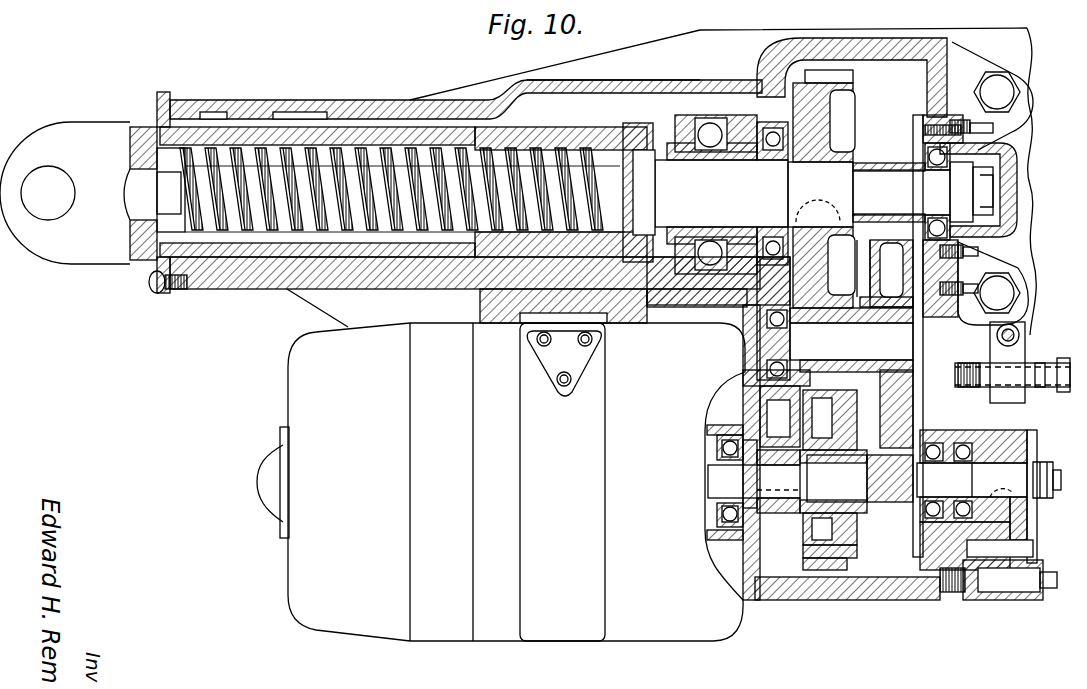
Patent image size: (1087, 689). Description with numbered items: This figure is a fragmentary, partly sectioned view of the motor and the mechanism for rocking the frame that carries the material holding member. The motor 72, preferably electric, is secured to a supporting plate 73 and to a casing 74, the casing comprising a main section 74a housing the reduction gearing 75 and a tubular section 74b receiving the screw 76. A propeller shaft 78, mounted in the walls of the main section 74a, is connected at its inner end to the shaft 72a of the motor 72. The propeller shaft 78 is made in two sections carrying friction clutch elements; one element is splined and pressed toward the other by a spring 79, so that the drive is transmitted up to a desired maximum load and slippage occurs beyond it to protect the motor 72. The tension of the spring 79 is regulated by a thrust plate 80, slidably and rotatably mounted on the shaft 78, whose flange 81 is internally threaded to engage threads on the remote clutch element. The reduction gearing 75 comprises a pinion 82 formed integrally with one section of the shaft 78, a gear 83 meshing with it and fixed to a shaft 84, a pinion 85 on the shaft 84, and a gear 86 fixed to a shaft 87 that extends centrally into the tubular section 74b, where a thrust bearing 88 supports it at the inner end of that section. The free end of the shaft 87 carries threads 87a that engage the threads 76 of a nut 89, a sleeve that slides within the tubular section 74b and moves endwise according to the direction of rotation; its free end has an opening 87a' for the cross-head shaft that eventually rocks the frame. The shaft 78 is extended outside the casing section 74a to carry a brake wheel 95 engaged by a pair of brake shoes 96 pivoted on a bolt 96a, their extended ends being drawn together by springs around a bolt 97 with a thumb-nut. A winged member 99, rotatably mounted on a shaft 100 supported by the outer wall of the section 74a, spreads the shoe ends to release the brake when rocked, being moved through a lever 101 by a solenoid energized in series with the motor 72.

The motor 72 is at (630, 641).
The shaft of the motor 72a is at (720, 482).
The supporting plate 73 is at (763, 40).
The casing 74 is at (480, 302).
The main section of the casing 74a is at (885, 600).
The tubular section of the casing 74b is at (588, 84).
The reduction gearing 75 is at (912, 335).
The screw 76 is at (592, 160).
The propeller shaft 78 is at (837, 478).
The spring 79 is at (850, 540).
The thrust plate 80 is at (857, 562).
The flange 81 is at (828, 570).
The pinion 82 is at (880, 508).
The gear 83 is at (880, 395).
The shaft 84 is at (832, 330).
The pinion 85 is at (842, 312).
The gear 86 is at (842, 113).
The shaft 87 is at (838, 170).
The threads 87a is at (633, 182).
The opening 87a' is at (65, 193).
The thrust bearing 88 is at (710, 120).
The nut 89 is at (527, 148).
The brake wheel 95 is at (1035, 552).
The brake shoes 96 is at (1012, 593).
The bolt 96a is at (985, 593).
The bolt 97 is at (1020, 336).
The winged member 99 is at (1035, 405).
The shaft 100 is at (1066, 370).
The lever 101 is at (1042, 380).